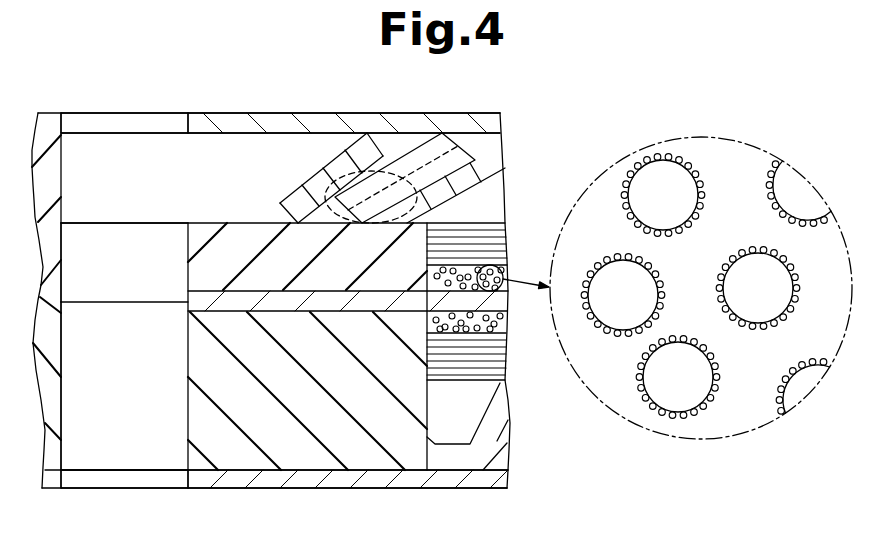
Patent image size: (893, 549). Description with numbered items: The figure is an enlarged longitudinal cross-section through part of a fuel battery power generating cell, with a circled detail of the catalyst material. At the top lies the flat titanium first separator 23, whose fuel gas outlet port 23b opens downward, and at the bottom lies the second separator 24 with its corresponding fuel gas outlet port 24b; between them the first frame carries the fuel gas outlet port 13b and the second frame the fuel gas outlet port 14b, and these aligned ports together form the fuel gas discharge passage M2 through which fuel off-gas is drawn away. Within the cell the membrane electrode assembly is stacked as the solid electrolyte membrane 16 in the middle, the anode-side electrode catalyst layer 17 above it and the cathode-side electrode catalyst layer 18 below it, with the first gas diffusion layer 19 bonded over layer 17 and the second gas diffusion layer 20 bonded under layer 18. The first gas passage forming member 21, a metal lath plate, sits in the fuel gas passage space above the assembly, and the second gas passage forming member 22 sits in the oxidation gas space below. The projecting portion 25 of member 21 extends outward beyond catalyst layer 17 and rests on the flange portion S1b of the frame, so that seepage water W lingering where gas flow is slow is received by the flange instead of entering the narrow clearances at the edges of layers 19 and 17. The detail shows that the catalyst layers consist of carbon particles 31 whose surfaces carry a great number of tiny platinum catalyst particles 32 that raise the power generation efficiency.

The fuel gas outlet port 13b is at (64, 242).
The fuel gas outlet port 14b is at (63, 453).
The solid electrolyte membrane 16 is at (504, 300).
The electrode catalyst layer 17 is at (502, 270).
The electrode catalyst layer 18 is at (502, 328).
The first gas diffusion layer 19 is at (500, 240).
The second gas diffusion layer 20 is at (492, 360).
The first gas passage forming member 21 is at (332, 160).
The second gas passage forming member 22 is at (502, 410).
The first separator 23 is at (299, 113).
The fuel gas outlet port 23b is at (186, 115).
The second separator 24 is at (364, 488).
The fuel gas outlet port 24b is at (183, 481).
The projecting portion 25 is at (398, 146).
The seepage water W is at (387, 171).
The flange portion S1b is at (238, 222).
The fuel gas discharge passage M2 is at (141, 434).
The carbon particle 31 is at (688, 200).
The catalyst particle 32 is at (686, 161).